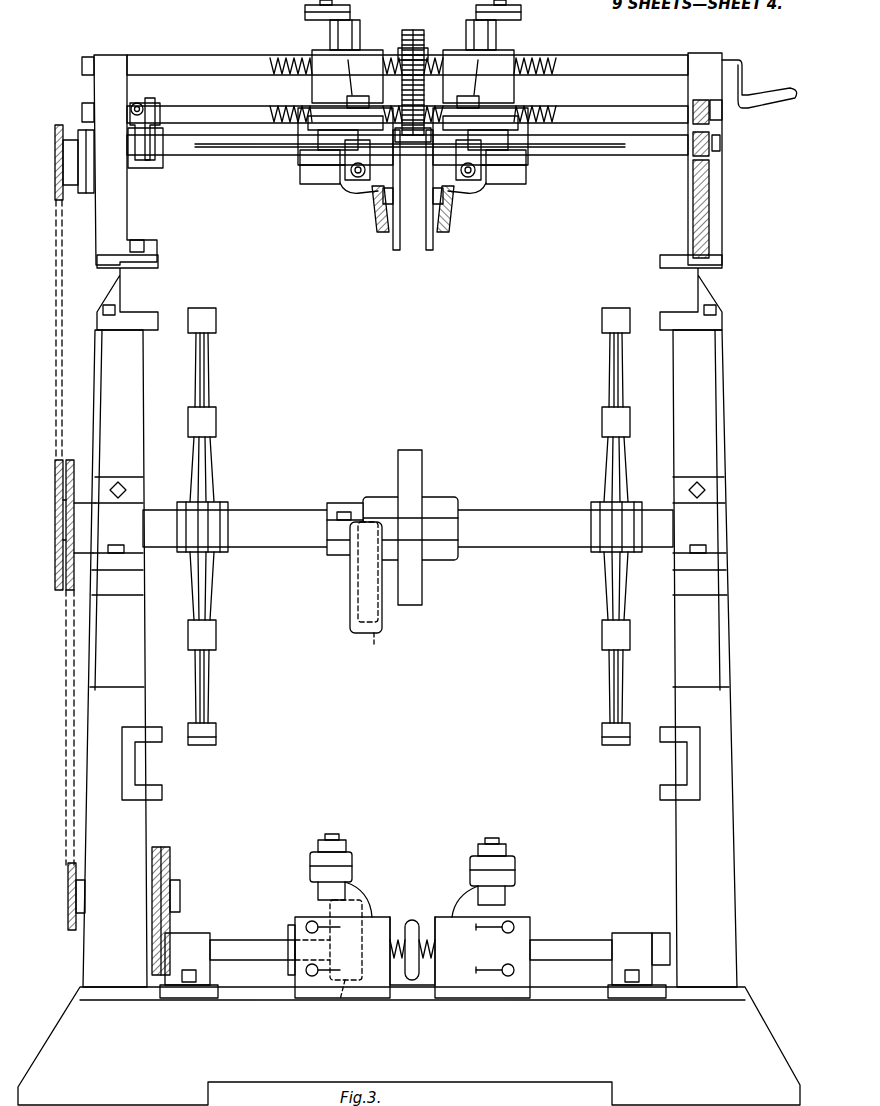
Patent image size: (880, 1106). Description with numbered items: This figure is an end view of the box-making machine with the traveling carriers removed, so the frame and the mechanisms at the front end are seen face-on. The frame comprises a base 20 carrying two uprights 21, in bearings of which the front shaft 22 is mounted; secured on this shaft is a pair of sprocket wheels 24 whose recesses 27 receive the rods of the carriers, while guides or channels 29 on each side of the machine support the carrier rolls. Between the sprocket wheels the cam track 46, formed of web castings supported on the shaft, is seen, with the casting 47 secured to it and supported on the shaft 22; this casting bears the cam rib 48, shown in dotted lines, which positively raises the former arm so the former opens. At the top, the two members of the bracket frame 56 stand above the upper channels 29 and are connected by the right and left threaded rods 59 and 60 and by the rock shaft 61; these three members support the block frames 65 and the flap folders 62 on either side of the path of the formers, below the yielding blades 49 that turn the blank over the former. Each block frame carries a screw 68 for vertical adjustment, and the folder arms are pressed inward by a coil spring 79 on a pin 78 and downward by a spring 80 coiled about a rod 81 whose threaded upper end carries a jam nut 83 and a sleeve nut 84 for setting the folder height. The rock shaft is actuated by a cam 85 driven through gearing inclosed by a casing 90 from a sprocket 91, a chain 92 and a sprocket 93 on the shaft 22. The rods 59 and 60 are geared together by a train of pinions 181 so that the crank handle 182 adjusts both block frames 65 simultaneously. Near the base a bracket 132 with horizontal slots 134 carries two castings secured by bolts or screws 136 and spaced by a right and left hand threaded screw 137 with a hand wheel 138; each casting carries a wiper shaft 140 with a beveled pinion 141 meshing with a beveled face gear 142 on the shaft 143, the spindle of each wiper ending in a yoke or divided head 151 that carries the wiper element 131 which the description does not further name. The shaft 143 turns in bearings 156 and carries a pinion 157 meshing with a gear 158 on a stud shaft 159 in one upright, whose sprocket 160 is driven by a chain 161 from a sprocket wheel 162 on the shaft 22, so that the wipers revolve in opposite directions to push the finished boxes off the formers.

The base 20 is at (409, 1046).
The uprights 21 is at (115, 658).
The front shaft 22 is at (540, 512).
The sprocket wheels 24 is at (206, 366).
The recesses 27 is at (214, 316).
The guides or channels 29 is at (116, 286).
The cam track 46 is at (422, 478).
The casting 47 is at (333, 553).
The cam rib 48 is at (366, 594).
The blades 49 is at (393, 243).
The bracket frame 56 is at (115, 210).
The rod 59 is at (212, 65).
The rod 60 is at (208, 112).
The rock shaft 61 is at (187, 150).
The folders 62 is at (377, 210).
The block frames 65 is at (413, 125).
The screw 68 is at (350, 12).
The pin 78 is at (322, 173).
The coil spring 79 is at (350, 175).
The spring 80 is at (408, 97).
The rod 81 is at (330, 38).
The jam nut 83 is at (305, 10).
The sleeve nut 84 is at (320, 20).
The cam 85 is at (146, 166).
The casing 90 is at (88, 175).
The sprocket 91 is at (55, 166).
The chain 92 is at (55, 328).
The sprocket 93 is at (55, 510).
The clamp 131 is at (310, 863).
The bracket 132 is at (450, 992).
The horizontal slots 134 is at (487, 969).
The bolts or screws 136 is at (514, 924).
The right and left hand threaded screw 137 is at (395, 925).
The hand wheel 138 is at (418, 925).
The wiper shaft 140 is at (325, 840).
The beveled pinion 141 is at (312, 920).
The beveled face gear 142 is at (328, 961).
The shaft 143 is at (252, 955).
The yoke or divided head 151 is at (342, 843).
The bearings 156 is at (198, 940).
The pinion 157 is at (152, 960).
The gear 158 is at (160, 864).
The stud shaft 159 is at (178, 898).
The sprocket 160 is at (68, 898).
The chain 161 is at (66, 737).
The sprocket wheel 162 is at (74, 472).
The train of pinions 181 is at (402, 60).
The crank handle 182 is at (765, 95).